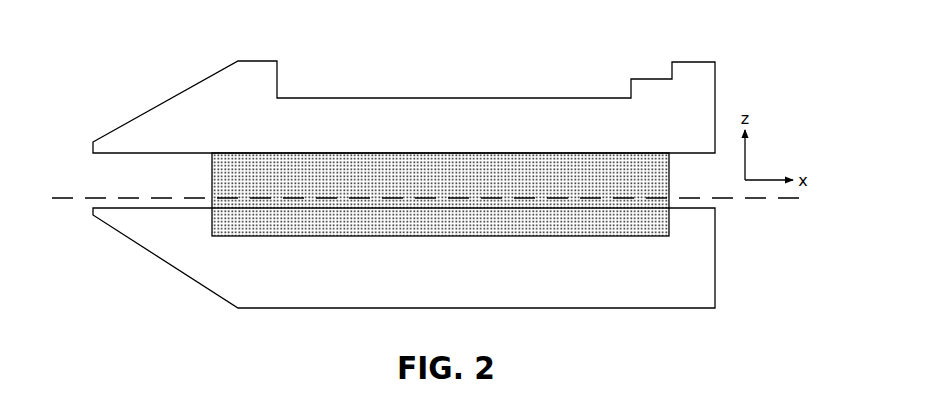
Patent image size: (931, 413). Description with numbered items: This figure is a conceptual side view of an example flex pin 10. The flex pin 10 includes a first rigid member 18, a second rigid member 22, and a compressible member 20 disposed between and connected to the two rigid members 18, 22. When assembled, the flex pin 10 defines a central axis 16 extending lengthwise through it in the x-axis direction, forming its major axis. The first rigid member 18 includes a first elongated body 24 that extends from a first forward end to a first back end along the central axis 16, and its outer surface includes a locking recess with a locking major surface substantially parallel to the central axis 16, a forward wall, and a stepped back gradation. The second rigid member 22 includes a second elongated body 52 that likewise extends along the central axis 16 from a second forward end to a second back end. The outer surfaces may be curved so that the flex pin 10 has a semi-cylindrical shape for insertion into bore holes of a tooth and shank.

The flex pin 10 is at (153, 52).
The central axis 16 is at (102, 197).
The first rigid member 18 is at (733, 83).
The compressible member 20 is at (438, 177).
The second rigid member 22 is at (733, 250).
The first elongated body 24 is at (282, 132).
The second elongated body 52 is at (283, 281).